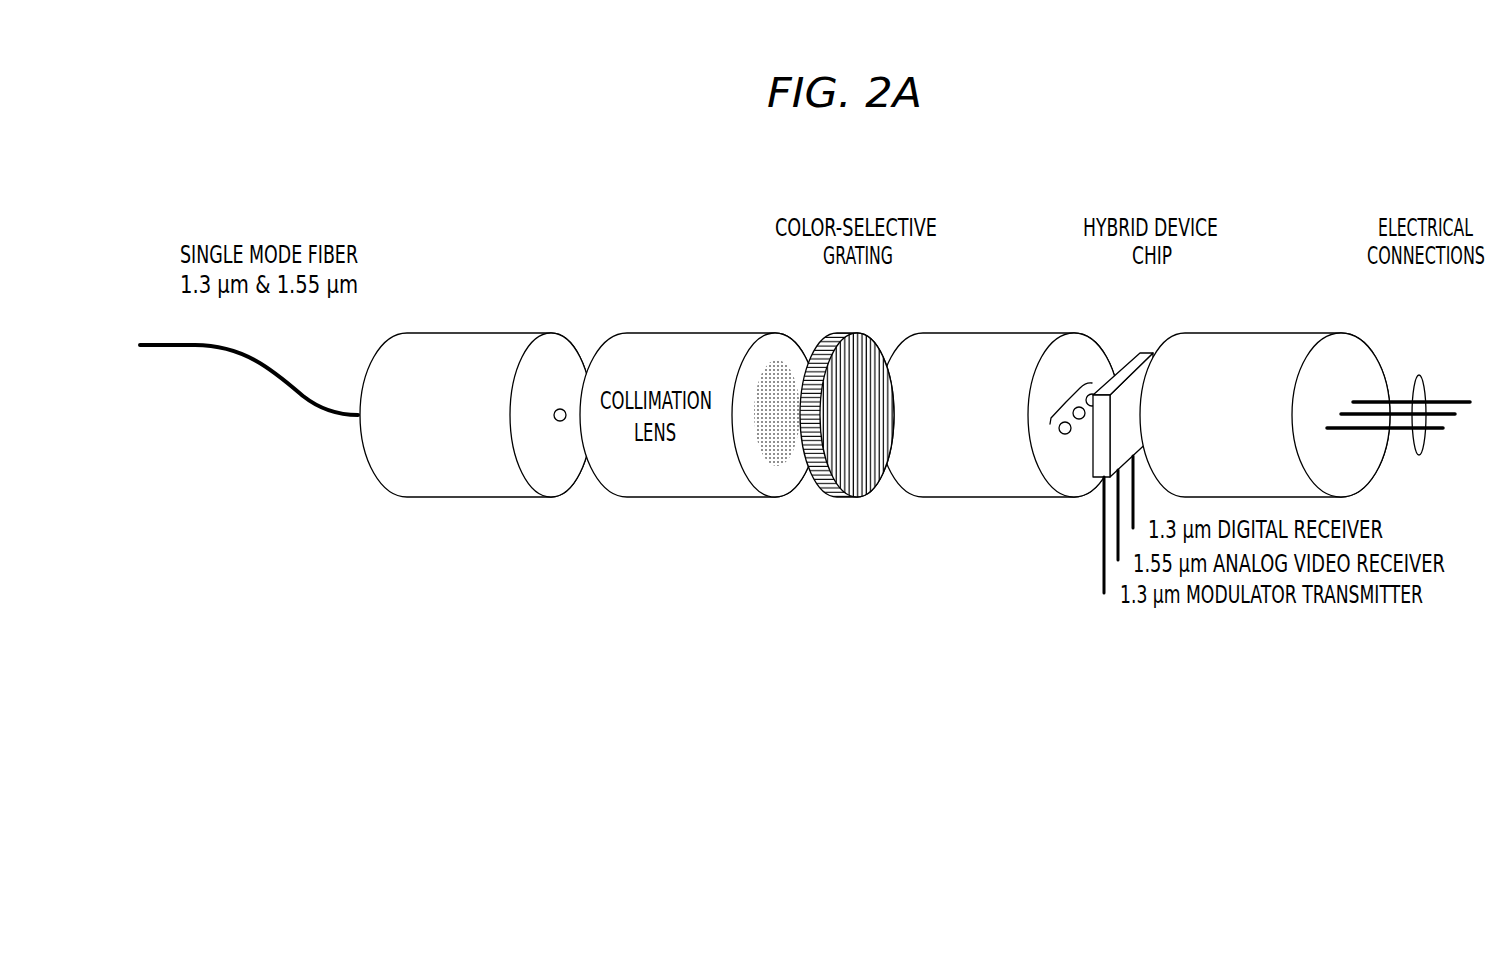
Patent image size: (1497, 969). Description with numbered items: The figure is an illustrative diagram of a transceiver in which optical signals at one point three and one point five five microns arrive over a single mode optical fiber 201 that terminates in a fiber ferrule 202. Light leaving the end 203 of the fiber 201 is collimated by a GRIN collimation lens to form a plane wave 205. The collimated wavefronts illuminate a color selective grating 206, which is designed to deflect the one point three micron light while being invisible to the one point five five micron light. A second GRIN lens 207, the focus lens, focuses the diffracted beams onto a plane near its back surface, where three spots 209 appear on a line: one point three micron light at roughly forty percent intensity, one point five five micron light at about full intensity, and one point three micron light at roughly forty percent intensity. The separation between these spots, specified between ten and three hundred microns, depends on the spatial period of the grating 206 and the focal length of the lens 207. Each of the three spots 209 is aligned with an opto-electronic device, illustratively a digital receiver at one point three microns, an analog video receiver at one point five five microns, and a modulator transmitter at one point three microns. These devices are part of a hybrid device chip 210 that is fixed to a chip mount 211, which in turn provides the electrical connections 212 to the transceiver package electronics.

The optical fiber 201 is at (264, 357).
The fiber ferrule 202 is at (486, 333).
The end of fiber 203 is at (560, 408).
The plane wave 205 is at (778, 360).
The color selective grating 206 is at (854, 333).
The second GRIN lens 207 is at (1003, 333).
The three spots 209 is at (1066, 400).
The hybrid device chip 210 is at (1143, 352).
The chip mount 211 is at (1266, 333).
The electrical connections 212 is at (1420, 375).